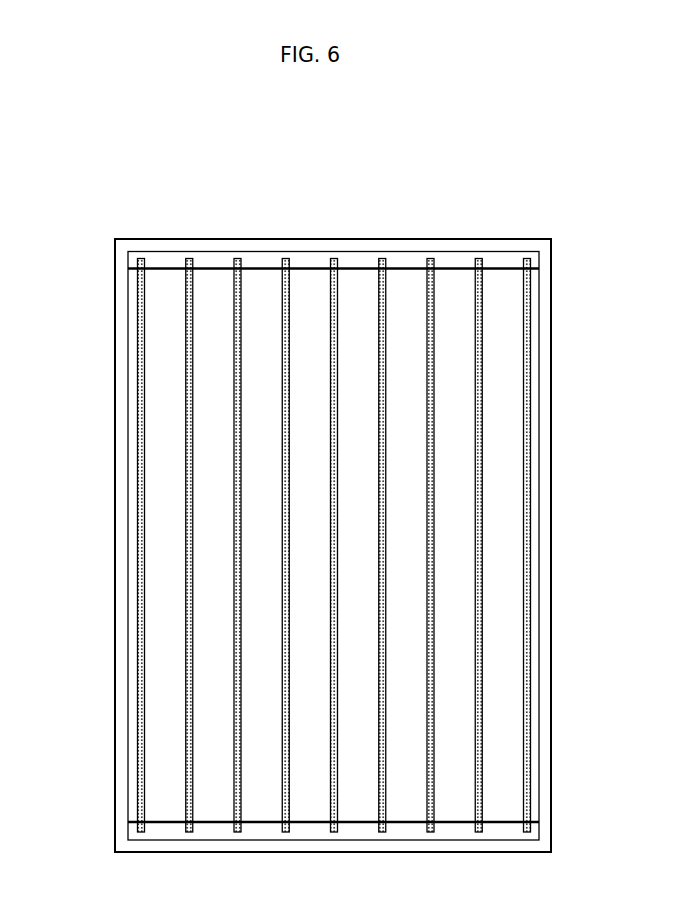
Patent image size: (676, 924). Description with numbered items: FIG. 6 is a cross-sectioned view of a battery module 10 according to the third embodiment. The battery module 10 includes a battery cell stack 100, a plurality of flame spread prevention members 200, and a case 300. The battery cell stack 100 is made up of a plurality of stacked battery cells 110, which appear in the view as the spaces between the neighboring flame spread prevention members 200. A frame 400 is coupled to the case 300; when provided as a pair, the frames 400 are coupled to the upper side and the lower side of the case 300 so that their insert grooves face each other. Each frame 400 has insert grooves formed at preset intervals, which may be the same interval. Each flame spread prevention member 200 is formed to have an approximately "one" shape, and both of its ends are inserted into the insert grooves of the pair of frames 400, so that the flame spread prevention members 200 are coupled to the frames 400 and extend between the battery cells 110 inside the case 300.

The battery module 10 is at (174, 126).
The battery cell stack 100 is at (249, 204).
The battery cell 110 is at (165, 292).
The flame spread prevention member 200 is at (137, 343).
The case 300 is at (432, 239).
The frame 400 is at (505, 259).